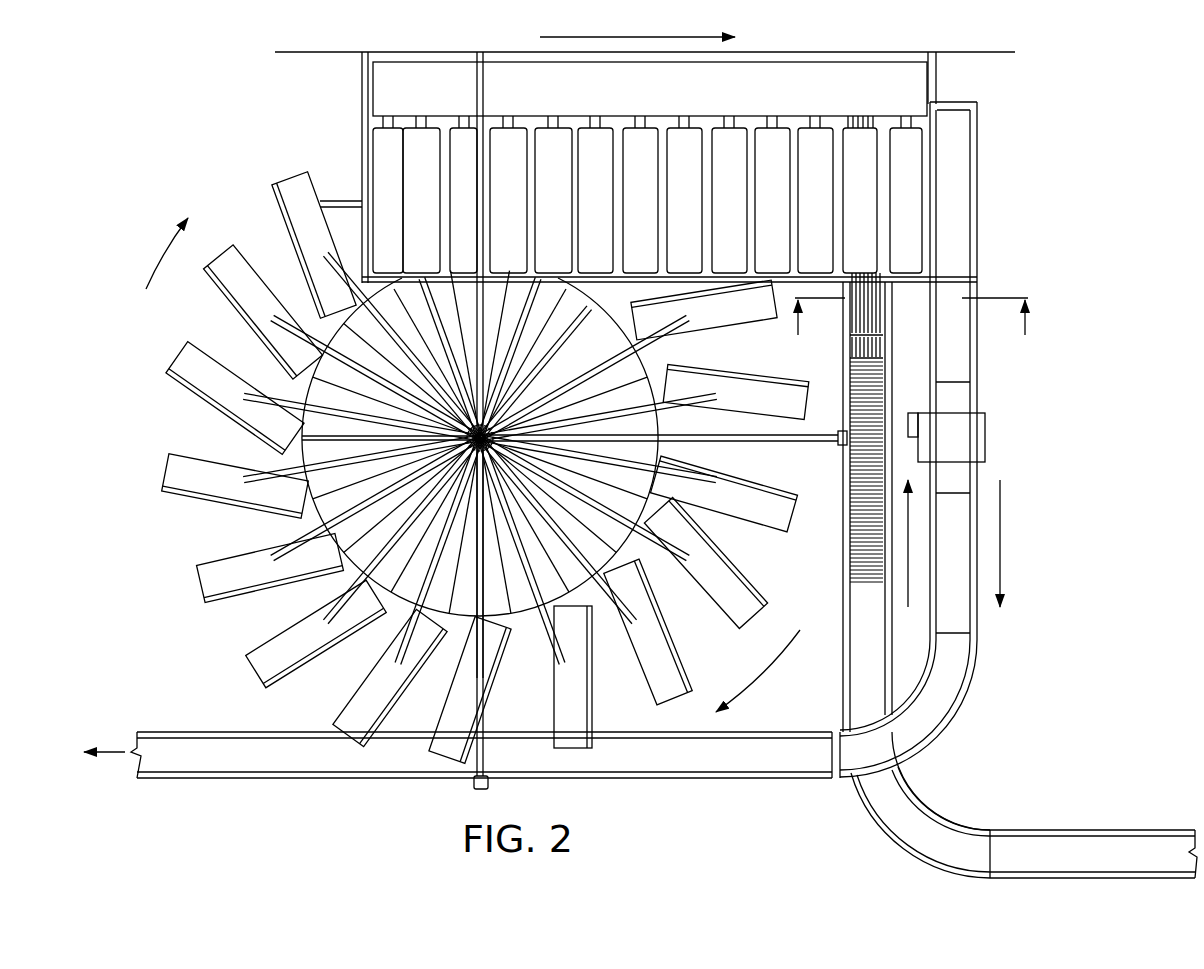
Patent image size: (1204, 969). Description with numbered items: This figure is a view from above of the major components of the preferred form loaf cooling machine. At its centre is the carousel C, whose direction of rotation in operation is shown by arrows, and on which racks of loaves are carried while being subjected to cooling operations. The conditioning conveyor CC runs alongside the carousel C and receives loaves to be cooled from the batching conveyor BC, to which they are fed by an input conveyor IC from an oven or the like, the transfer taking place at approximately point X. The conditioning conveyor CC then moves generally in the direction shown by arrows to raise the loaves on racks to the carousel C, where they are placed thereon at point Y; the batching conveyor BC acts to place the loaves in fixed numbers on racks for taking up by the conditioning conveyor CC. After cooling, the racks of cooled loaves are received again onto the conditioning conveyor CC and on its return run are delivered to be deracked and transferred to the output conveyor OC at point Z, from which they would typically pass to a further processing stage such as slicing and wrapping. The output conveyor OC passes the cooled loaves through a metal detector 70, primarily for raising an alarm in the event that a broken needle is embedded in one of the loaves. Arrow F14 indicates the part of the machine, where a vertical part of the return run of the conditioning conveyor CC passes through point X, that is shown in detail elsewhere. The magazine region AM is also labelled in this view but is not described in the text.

The accumulator magazine AM is at (357, 120).
The conditioning conveyor CC is at (358, 130).
The point Y is at (355, 192).
The point Z is at (985, 237).
The batching conveyor BC is at (842, 334).
The point X is at (903, 293).
The arrow F14 is at (934, 317).
The output conveyor OC is at (985, 370).
The input conveyor IC is at (840, 468).
The metal detector 70 is at (972, 443).
The carousel C is at (183, 537).